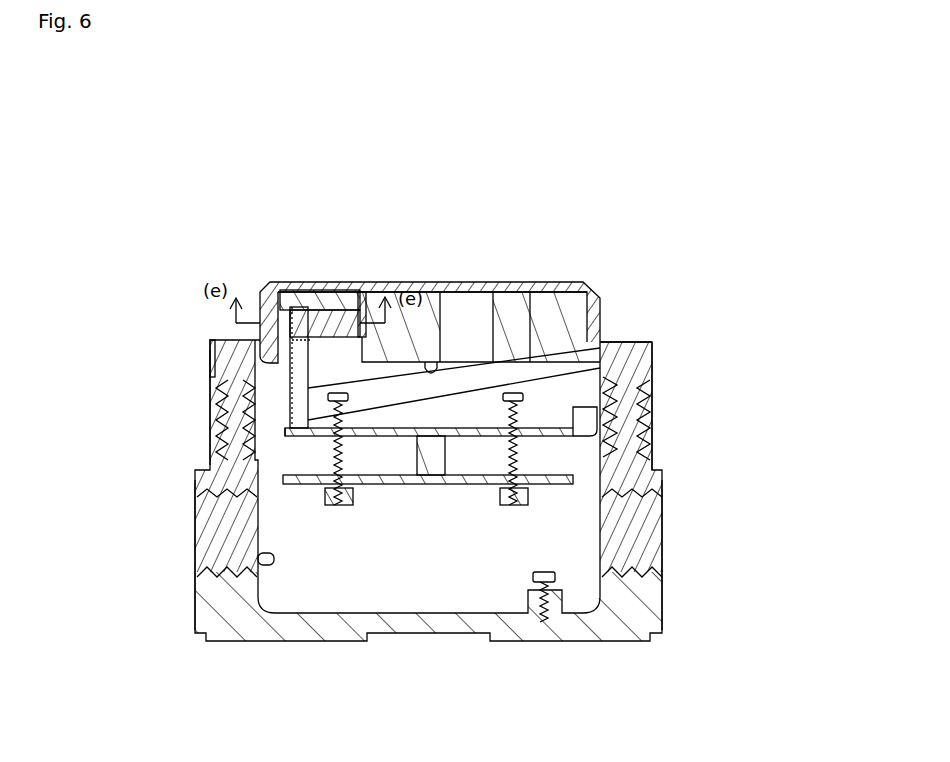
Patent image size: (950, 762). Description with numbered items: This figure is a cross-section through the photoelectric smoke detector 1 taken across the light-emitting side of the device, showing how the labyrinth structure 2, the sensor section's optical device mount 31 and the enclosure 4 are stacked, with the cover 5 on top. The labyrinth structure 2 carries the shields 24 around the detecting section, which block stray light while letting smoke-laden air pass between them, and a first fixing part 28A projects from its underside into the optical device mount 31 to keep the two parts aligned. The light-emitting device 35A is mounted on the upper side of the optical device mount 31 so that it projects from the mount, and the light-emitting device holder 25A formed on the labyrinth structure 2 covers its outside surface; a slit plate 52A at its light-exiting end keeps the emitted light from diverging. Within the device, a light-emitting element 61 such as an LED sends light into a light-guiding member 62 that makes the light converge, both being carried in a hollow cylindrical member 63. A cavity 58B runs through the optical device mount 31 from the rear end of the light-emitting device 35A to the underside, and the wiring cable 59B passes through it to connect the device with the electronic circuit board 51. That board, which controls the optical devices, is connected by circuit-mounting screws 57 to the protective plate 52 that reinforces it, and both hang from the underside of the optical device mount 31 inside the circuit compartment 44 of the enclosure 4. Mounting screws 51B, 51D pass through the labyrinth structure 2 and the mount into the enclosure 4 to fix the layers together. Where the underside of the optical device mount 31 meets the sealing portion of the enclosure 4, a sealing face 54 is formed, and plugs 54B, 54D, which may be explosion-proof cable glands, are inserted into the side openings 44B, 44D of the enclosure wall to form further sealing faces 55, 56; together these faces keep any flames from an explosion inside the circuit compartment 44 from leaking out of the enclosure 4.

The photoelectric smoke detector 1 is at (697, 133).
The labyrinth structure 2 is at (260, 352).
The enclosure 4 is at (657, 625).
The cover 5 is at (600, 294).
The shields 24 is at (563, 291).
The light-emitting device holder 25A is at (355, 282).
The first fixing part 28A is at (437, 352).
The optical device mount 31 is at (297, 345).
The light-emitting device 35A is at (242, 254).
The circuit compartment 44 is at (583, 593).
The side opening 44B is at (275, 548).
The side opening 44D is at (600, 520).
The electronic circuit board 51 is at (622, 470).
The mounting screw 51B is at (255, 455).
The mounting screw 51D is at (640, 342).
The protective plate 52 is at (388, 485).
The slit plate 52A is at (390, 287).
The sealing face 54 is at (657, 402).
The plug 54B is at (215, 572).
The plug 54D is at (660, 556).
The sealing face 55 is at (190, 573).
The sealing face 56 is at (670, 581).
The circuit-mounting screws 57 is at (337, 505).
The cavity 58B is at (303, 387).
The wiring cable 59B is at (290, 412).
The light-emitting element 61 is at (262, 283).
The light-guiding member A 62 is at (287, 290).
The hollow cylindrical member A 63 is at (320, 290).